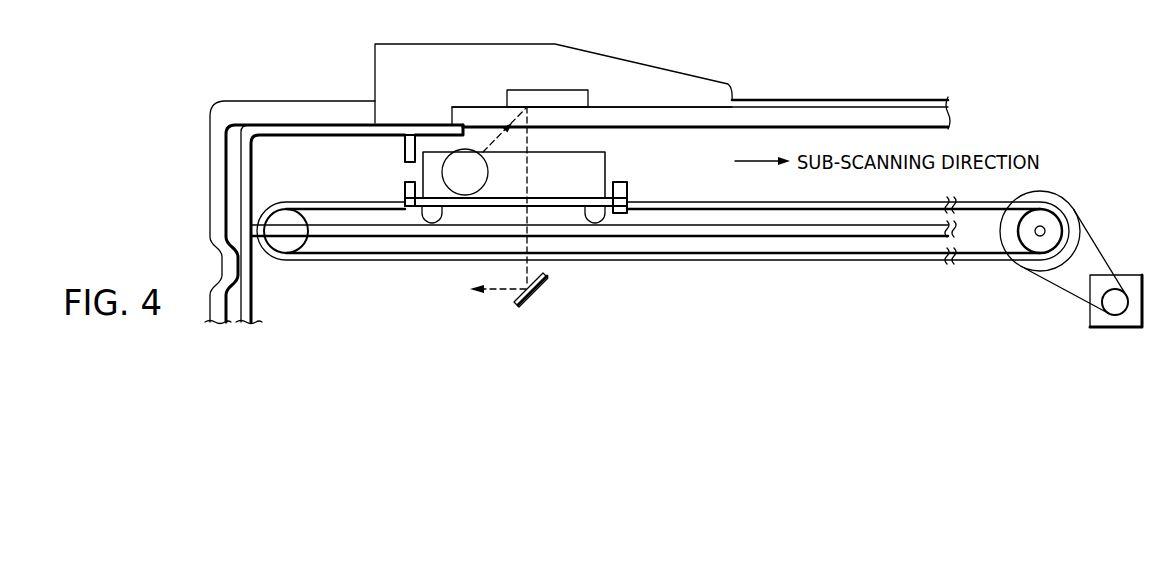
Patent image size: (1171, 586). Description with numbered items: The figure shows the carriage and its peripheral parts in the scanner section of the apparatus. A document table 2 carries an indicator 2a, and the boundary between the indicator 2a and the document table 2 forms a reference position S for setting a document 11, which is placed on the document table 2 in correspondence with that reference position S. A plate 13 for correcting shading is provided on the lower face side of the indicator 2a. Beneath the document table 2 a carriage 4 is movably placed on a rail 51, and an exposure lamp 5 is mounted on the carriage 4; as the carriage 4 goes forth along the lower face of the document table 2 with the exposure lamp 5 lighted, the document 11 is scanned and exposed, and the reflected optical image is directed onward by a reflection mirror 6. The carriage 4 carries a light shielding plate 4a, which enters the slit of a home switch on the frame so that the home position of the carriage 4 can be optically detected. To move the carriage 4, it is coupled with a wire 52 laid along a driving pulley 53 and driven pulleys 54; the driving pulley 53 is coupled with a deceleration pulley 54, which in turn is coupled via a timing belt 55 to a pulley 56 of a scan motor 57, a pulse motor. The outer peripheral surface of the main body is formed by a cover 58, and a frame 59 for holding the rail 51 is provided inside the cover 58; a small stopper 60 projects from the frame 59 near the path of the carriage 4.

The document table 2 is at (665, 105).
The indicator 2a is at (595, 50).
The reference position S is at (736, 79).
The document 11 is at (863, 101).
The plate for correcting shading 13 is at (538, 90).
The carriage 4 is at (630, 190).
The light shielding plate 4a is at (604, 151).
The exposure lamp 5 is at (488, 172).
The reflection mirror 6 is at (534, 292).
The rail 51 is at (743, 237).
The wire 52 is at (315, 201).
The driving pulley 53 is at (1040, 249).
The driven pulley / deceleration pulley 54 is at (285, 248).
The timing belt 55 is at (1103, 248).
The pulley of scan motor 56 is at (1108, 311).
The scan motor 57 is at (1133, 275).
The cover 58 is at (322, 100).
The frame 59 is at (335, 136).
The stopper 60 is at (406, 153).